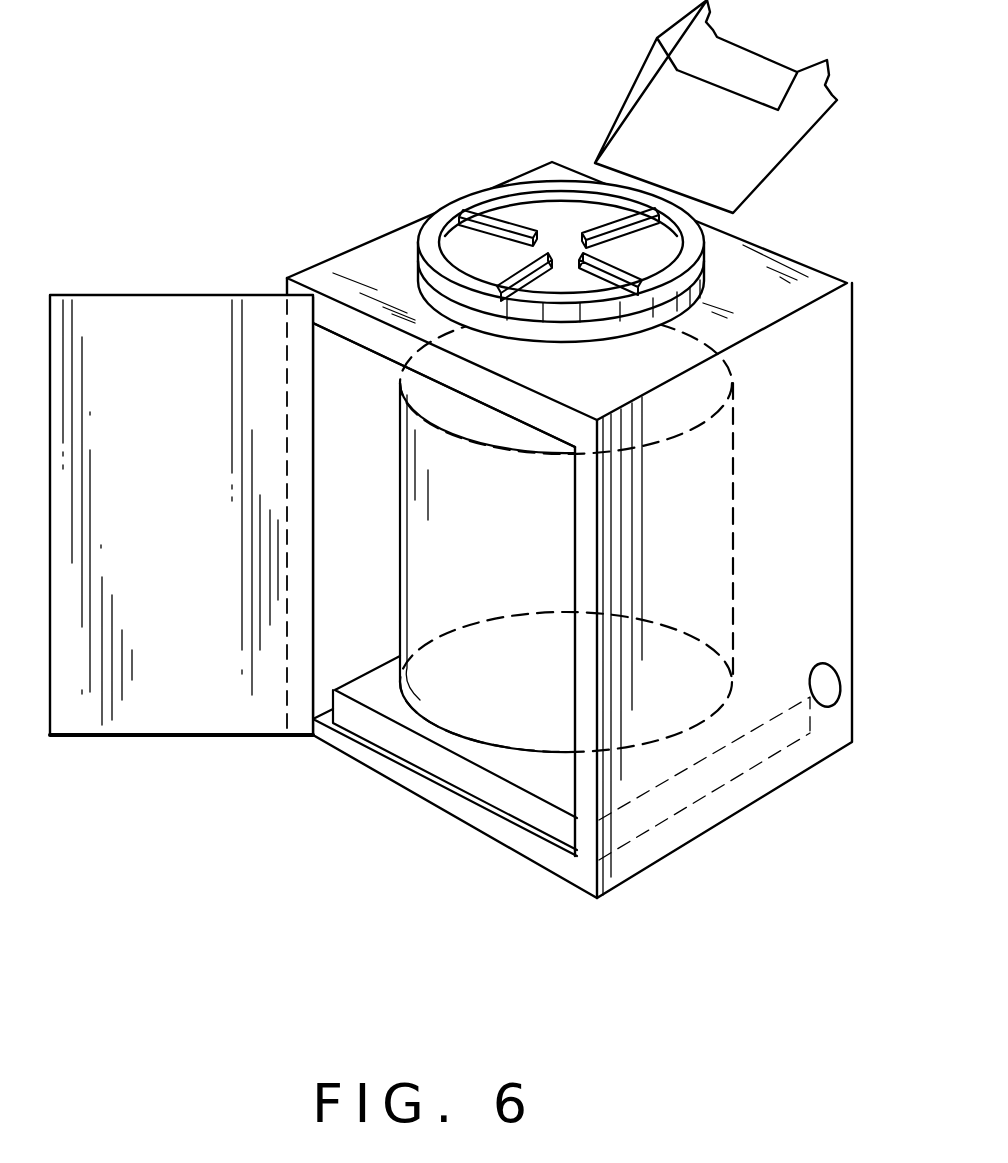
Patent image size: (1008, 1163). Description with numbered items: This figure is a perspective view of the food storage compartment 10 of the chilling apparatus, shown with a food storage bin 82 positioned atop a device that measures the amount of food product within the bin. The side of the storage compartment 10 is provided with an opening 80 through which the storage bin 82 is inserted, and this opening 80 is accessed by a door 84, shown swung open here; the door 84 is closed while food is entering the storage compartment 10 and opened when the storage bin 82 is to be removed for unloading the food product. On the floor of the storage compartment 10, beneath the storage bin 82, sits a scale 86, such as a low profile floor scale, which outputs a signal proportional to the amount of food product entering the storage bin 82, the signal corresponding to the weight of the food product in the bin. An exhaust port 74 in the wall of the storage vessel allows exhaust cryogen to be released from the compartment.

The storage compartment 10 is at (805, 262).
The exhaust port 74 is at (833, 680).
The opening 80 is at (350, 364).
The storage bin 82 is at (457, 737).
The door 84 is at (233, 737).
The scale 86 is at (517, 807).